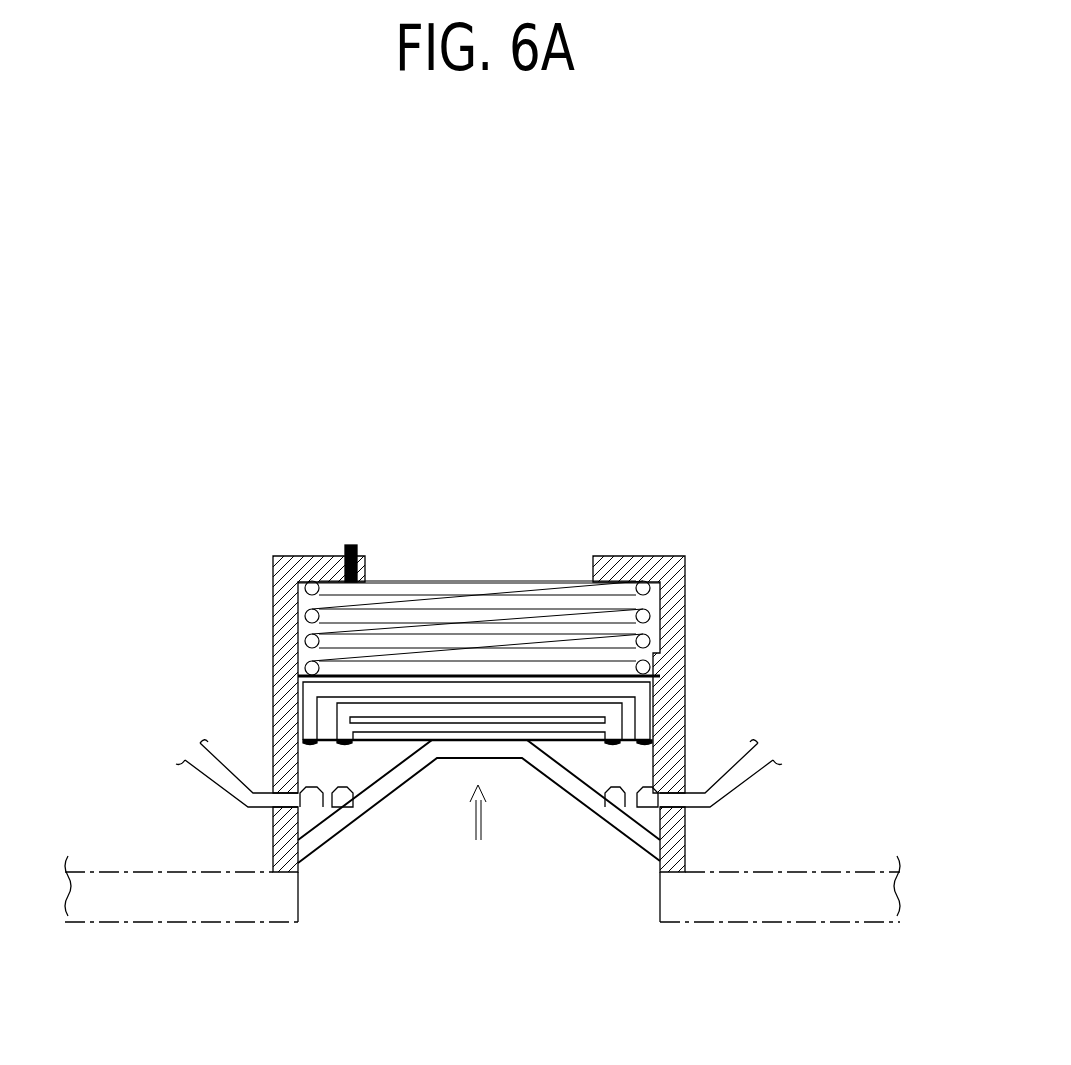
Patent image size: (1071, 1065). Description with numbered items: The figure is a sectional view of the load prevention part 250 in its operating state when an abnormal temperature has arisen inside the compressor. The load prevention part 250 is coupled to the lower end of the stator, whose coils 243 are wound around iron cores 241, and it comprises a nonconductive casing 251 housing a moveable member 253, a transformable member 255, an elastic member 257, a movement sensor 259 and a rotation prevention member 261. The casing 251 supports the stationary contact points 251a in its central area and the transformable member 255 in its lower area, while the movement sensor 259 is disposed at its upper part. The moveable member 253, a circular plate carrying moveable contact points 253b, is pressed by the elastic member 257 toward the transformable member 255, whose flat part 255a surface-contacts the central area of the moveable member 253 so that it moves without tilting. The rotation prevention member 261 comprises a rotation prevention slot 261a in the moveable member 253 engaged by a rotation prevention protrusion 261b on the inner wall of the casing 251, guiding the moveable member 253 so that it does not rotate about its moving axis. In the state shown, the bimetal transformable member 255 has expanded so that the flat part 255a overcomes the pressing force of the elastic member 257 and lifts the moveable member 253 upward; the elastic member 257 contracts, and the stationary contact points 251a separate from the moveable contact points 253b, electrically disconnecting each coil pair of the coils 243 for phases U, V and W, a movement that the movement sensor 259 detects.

The iron core 241 is at (190, 912).
The coil 243 is at (230, 792).
The load prevention part 250 is at (219, 505).
The casing 251 is at (687, 595).
The stationary contact point 251a is at (346, 810).
The moveable member 253 is at (547, 728).
The moveable contact point 253b is at (342, 746).
The transformable member 255 is at (382, 790).
The flat part 255a is at (505, 743).
The elastic member 257 is at (397, 583).
The movement sensor 259 is at (345, 547).
The rotation prevention member 261 is at (615, 697).
The rotation prevention slot 261a is at (686, 742).
The rotation prevention protrusion 261b is at (686, 690).